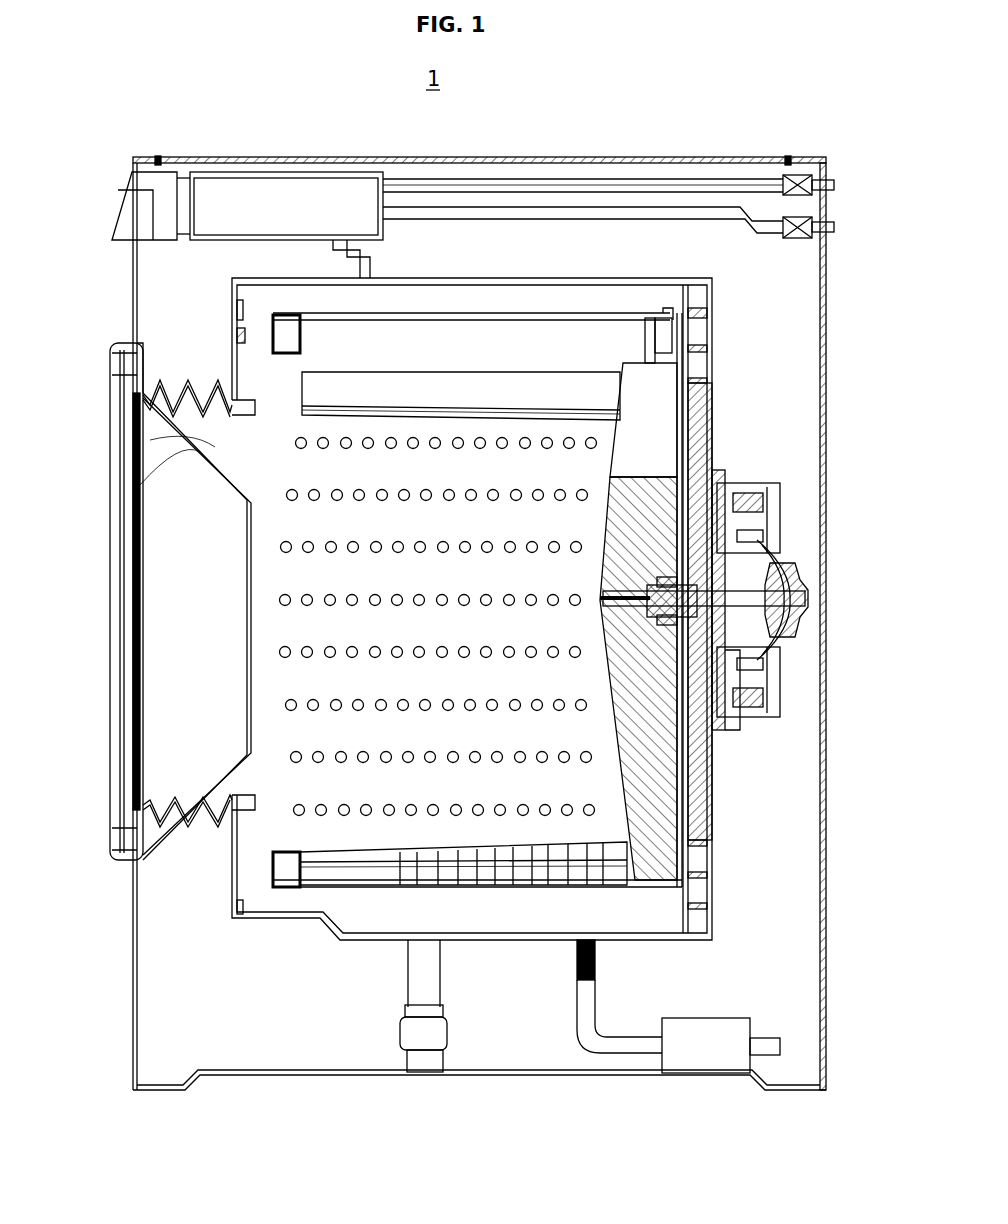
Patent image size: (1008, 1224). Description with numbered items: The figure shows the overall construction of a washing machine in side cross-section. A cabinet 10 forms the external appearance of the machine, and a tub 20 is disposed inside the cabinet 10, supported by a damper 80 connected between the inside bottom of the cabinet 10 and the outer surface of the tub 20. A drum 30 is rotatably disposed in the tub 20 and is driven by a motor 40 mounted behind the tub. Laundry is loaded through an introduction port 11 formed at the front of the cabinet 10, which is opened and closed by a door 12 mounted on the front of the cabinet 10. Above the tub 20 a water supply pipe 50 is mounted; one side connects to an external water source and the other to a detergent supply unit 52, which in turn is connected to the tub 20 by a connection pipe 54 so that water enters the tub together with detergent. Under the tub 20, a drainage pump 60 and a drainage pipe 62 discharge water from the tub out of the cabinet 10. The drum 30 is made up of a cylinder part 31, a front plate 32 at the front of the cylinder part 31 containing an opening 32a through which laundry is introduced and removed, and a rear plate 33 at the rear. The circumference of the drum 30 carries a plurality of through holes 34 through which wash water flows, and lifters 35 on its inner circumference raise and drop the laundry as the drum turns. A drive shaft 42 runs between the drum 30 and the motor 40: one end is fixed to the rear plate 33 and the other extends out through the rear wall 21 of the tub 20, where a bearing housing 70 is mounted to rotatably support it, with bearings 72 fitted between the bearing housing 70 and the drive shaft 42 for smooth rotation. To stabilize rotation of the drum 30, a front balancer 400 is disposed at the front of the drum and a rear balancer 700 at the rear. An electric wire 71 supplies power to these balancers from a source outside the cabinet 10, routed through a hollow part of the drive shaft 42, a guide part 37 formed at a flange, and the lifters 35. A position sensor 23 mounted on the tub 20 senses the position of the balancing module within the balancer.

The cabinet 10 is at (826, 272).
The introduction port 11 is at (163, 380).
The door 12 is at (117, 598).
The tub 20 is at (654, 278).
The rear wall 21 is at (712, 455).
The position sensor 23 is at (240, 333).
The drum 30 is at (556, 310).
The cylinder part 31 is at (505, 313).
The front plate 32 is at (210, 437).
The opening 32a is at (200, 455).
The rear plate 33 is at (645, 420).
The through holes 34 is at (485, 542).
The lifters 35 is at (272, 870).
The guide part 37 is at (712, 770).
The motor 40 is at (748, 600).
The drive shaft 42 is at (780, 640).
The water supply pipe 50 is at (672, 207).
The detergent supply unit 52 is at (288, 172).
The connection pipe 54 is at (370, 255).
The drainage pump 60 is at (715, 1018).
The drainage pipe 62 is at (595, 997).
The bearing housing 70 is at (775, 680).
The electric wire 71 is at (805, 600).
The bearings 72 is at (695, 582).
The damper 80 is at (440, 990).
The front balancer 400 is at (240, 312).
The rear balancer 700 is at (712, 332).